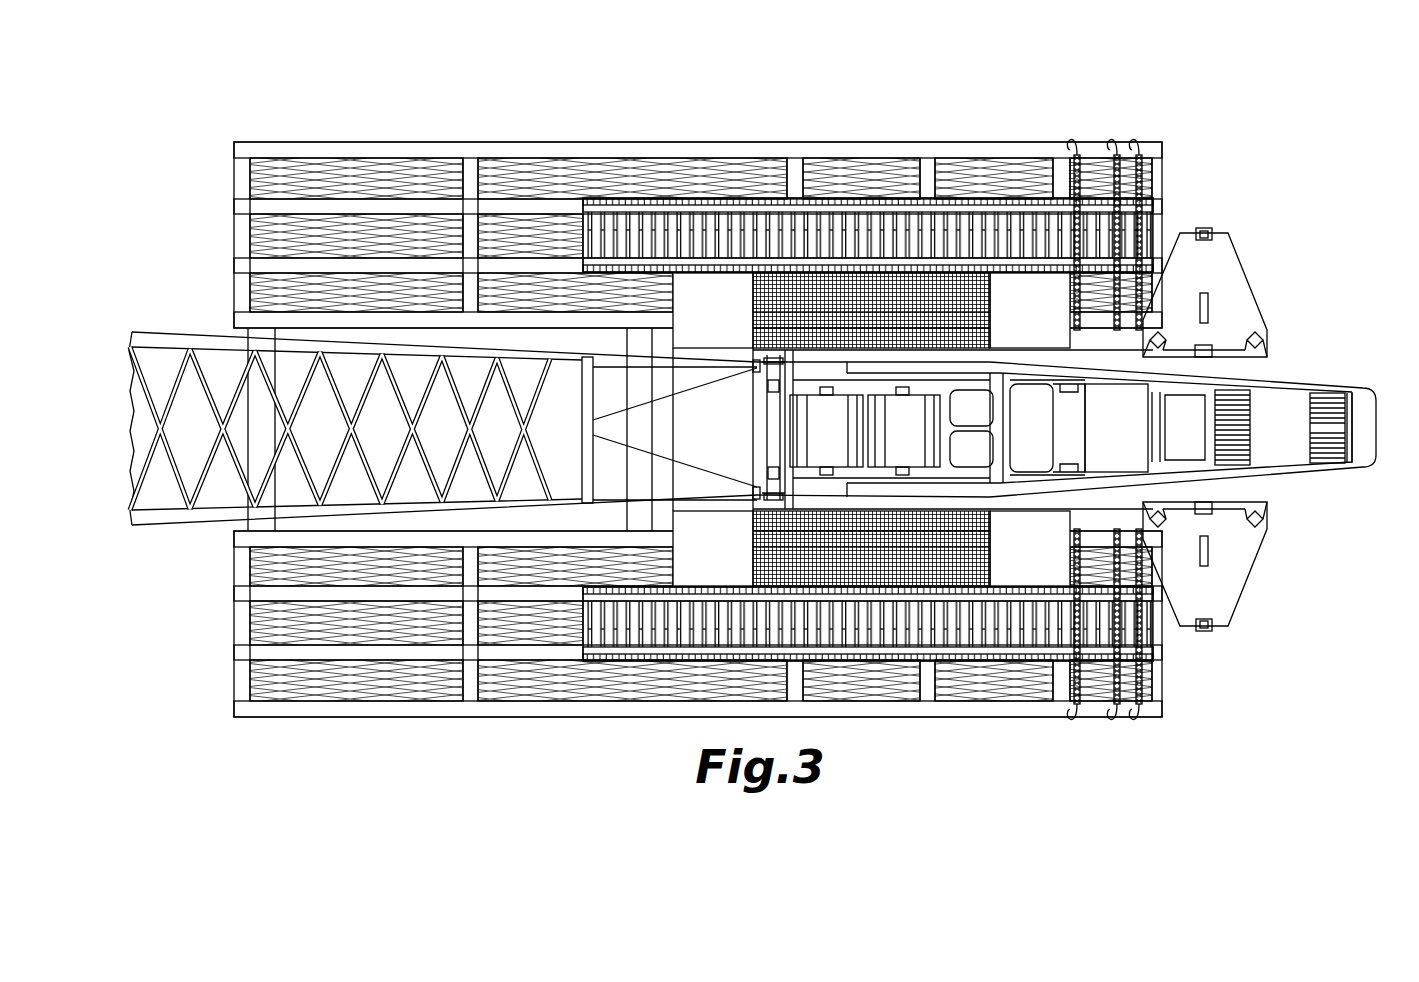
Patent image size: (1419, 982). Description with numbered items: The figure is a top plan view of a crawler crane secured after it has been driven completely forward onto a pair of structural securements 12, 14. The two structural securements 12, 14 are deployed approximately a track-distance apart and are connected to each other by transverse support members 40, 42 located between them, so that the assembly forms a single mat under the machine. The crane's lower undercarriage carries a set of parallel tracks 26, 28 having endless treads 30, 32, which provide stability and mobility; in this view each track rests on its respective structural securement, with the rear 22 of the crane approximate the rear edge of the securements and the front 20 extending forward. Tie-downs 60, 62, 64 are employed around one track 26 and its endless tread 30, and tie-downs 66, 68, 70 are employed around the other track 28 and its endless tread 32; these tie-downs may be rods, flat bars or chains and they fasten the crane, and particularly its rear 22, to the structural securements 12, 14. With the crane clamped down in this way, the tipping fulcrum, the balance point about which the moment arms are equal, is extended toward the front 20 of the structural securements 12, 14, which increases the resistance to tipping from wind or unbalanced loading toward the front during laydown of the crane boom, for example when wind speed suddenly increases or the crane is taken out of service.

The structural securement 12 is at (373, 717).
The structural securement 14 is at (373, 142).
The front 20 is at (672, 518).
The rear 22 is at (1377, 430).
The track 26 is at (951, 650).
The track 28 is at (943, 200).
The endless tread 30 is at (878, 632).
The endless tread 32 is at (878, 230).
The transverse support member 40 is at (255, 394).
The transverse support member 42 is at (632, 345).
The tie-down 60 is at (1076, 688).
The tie-down 62 is at (1116, 688).
The tie-down 64 is at (1139, 688).
The tie-down 66 is at (1076, 172).
The tie-down 68 is at (1116, 172).
The tie-down 70 is at (1138, 172).